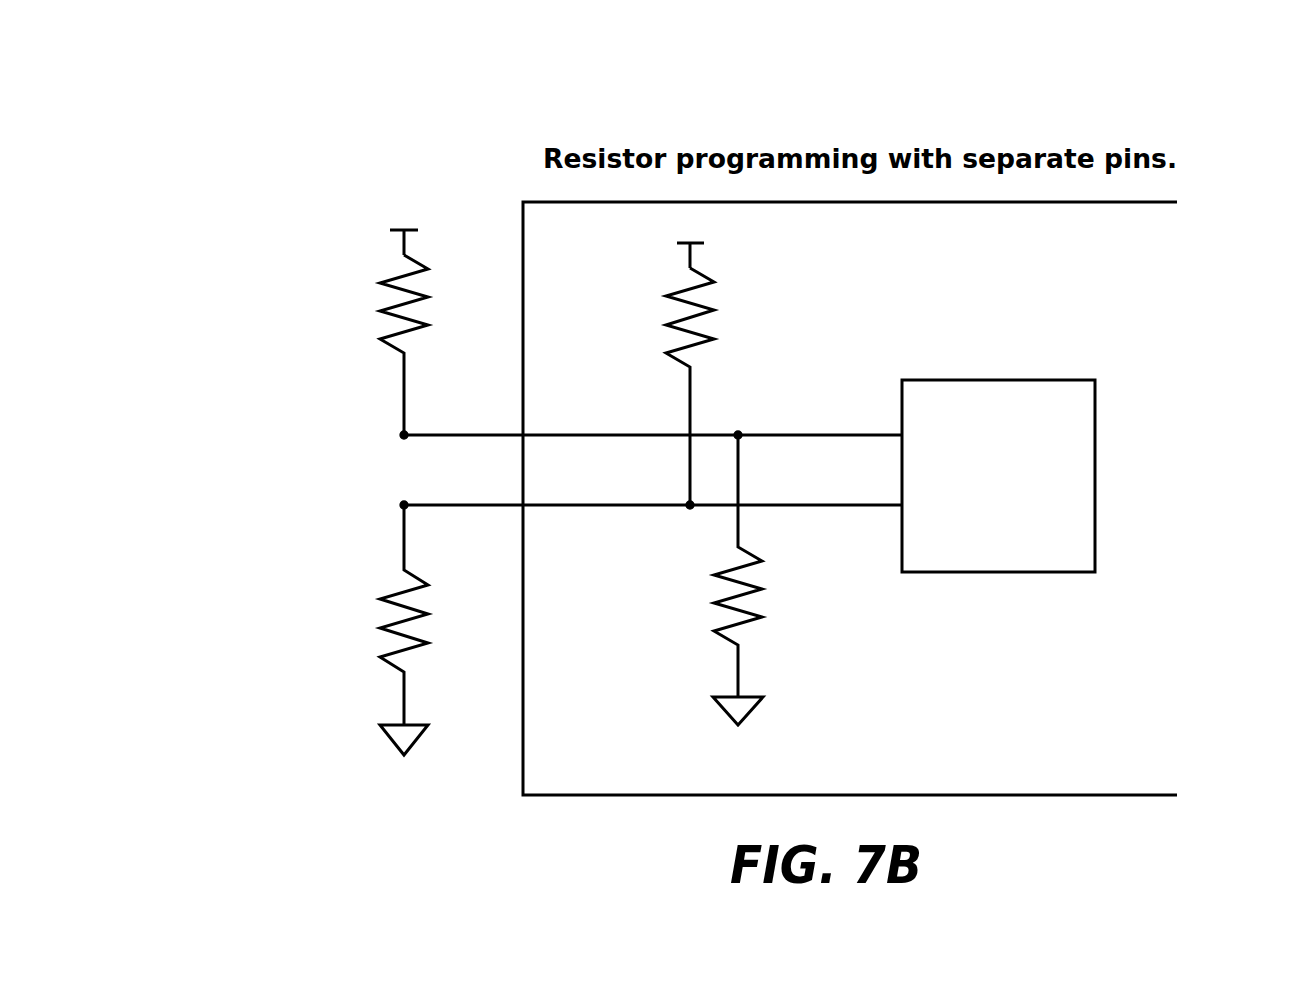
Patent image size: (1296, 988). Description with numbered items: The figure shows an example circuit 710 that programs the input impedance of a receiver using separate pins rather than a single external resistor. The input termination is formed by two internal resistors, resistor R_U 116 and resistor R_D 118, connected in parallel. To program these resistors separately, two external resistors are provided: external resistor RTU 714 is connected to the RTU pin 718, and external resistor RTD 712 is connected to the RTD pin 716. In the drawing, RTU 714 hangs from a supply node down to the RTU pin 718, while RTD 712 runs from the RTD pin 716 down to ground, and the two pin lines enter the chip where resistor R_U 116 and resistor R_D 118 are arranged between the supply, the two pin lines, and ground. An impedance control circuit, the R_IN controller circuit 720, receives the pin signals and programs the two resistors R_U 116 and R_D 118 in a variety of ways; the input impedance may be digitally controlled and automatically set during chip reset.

The circuit for programming input impedance with separate pins 710 is at (1160, 111).
The external resistor RTU 714 is at (378, 323).
The external resistor RTD 712 is at (378, 636).
The RTU pin 718 is at (278, 436).
The RTD pin 716 is at (278, 497).
The resistor R_U 116 is at (730, 297).
The resistor R_D 118 is at (712, 589).
The R_IN controller circuit 720 is at (1097, 468).